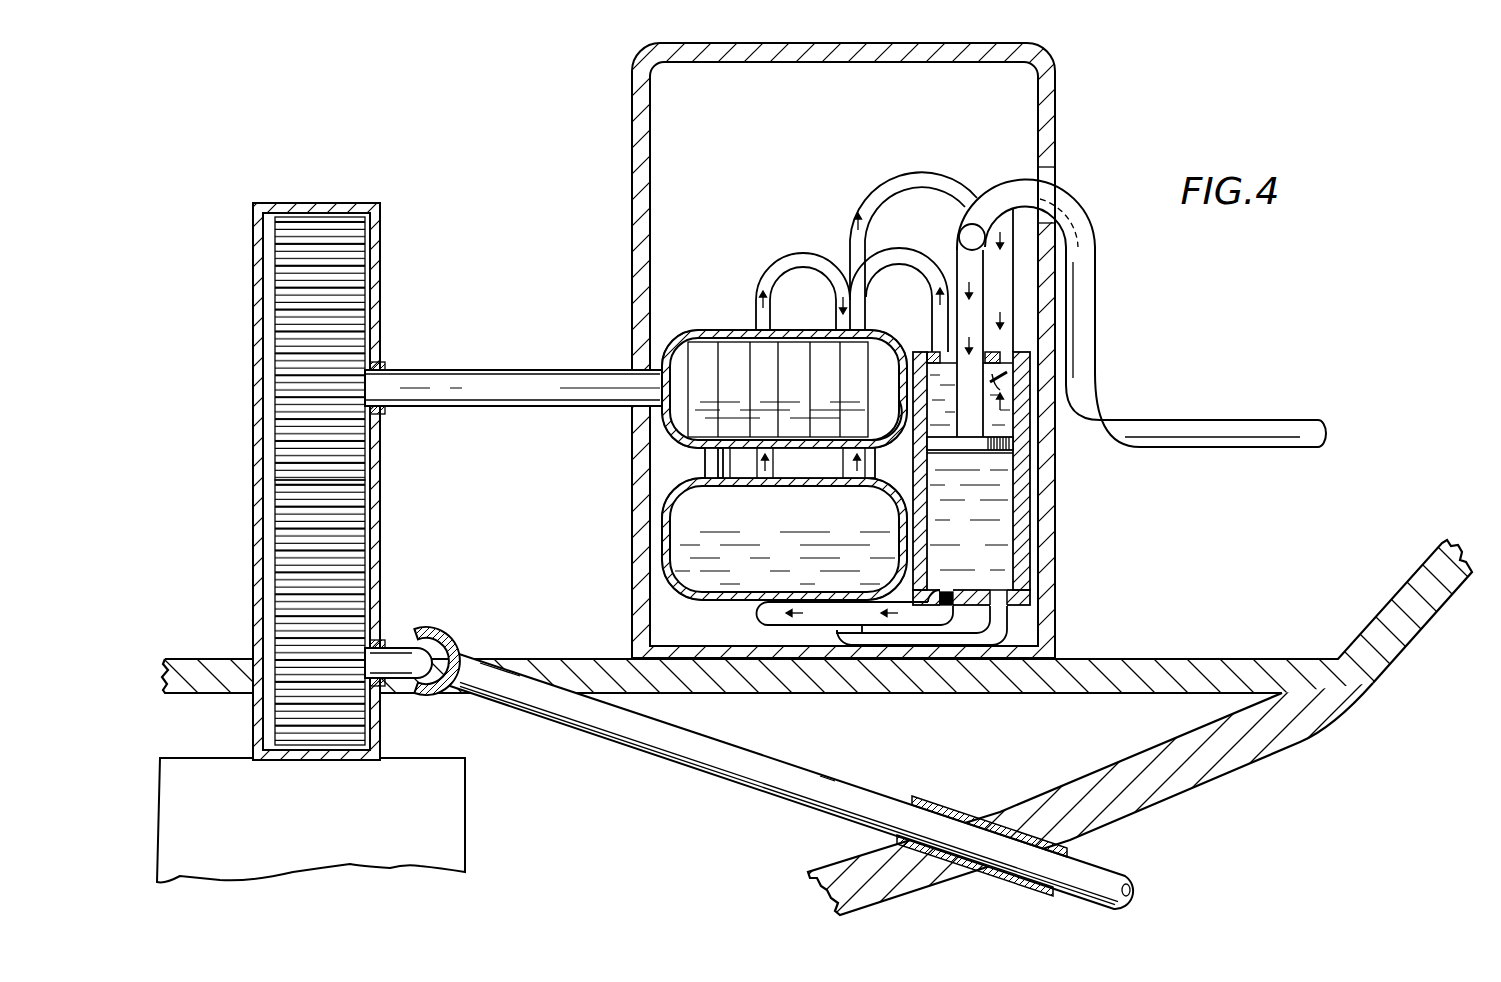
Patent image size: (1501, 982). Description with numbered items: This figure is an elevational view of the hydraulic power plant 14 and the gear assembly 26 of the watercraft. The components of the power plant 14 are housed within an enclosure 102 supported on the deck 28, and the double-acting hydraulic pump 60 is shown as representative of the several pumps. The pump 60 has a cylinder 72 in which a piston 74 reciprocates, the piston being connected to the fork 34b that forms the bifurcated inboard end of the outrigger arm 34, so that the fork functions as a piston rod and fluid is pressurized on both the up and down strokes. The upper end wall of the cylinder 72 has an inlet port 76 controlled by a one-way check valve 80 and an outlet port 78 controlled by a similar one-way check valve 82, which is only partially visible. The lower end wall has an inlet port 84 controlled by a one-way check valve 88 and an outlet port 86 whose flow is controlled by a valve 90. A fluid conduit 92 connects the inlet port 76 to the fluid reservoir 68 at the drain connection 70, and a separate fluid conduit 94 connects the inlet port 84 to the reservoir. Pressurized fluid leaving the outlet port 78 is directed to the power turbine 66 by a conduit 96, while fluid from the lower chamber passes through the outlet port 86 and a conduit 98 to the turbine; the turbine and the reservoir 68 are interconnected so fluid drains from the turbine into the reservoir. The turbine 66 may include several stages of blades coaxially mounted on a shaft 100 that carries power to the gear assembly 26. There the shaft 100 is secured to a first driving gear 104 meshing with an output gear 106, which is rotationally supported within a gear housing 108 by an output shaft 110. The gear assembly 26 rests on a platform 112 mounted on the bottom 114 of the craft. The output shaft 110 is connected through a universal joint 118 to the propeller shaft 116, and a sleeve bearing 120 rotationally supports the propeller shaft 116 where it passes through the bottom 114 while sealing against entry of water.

The hydraulic power plant 14 is at (1079, 71).
The gear assembly 26 is at (351, 176).
The deck 28 is at (1192, 658).
The outrigger arm 34 is at (1186, 420).
The fork 34b is at (976, 272).
The hydraulic pump 60 is at (1030, 458).
The power turbine 66 is at (713, 327).
The fluid reservoir 68 is at (658, 536).
The drain connection 70 is at (736, 526).
The cylinder 72 is at (1031, 548).
The piston 74 is at (983, 450).
The inlet port 76 is at (1004, 358).
The outlet port 78 is at (907, 437).
The one-way check valve 80 is at (1010, 387).
The one-way check valve 82 is at (942, 350).
The inlet port 84 is at (1005, 592).
The outlet port 86 is at (942, 597).
The one-way check valve 88 is at (1010, 596).
The one-way check valve 90 is at (952, 605).
The fluid conduit 92 is at (884, 176).
The fluid conduit 94 is at (1000, 634).
The conduit 96 is at (932, 226).
The conduit 98 is at (773, 466).
The shaft 100 is at (493, 400).
The enclosure 102 is at (632, 140).
The first driving gear 104 is at (343, 305).
The output gear 106 is at (347, 703).
The gear housing 108 is at (380, 258).
The output shaft 110 is at (397, 647).
The platform 112 is at (268, 835).
The bottom 114 is at (828, 867).
The propeller shaft 116 is at (698, 763).
The universal joint 118 is at (453, 647).
The sleeve bearing 120 is at (947, 803).